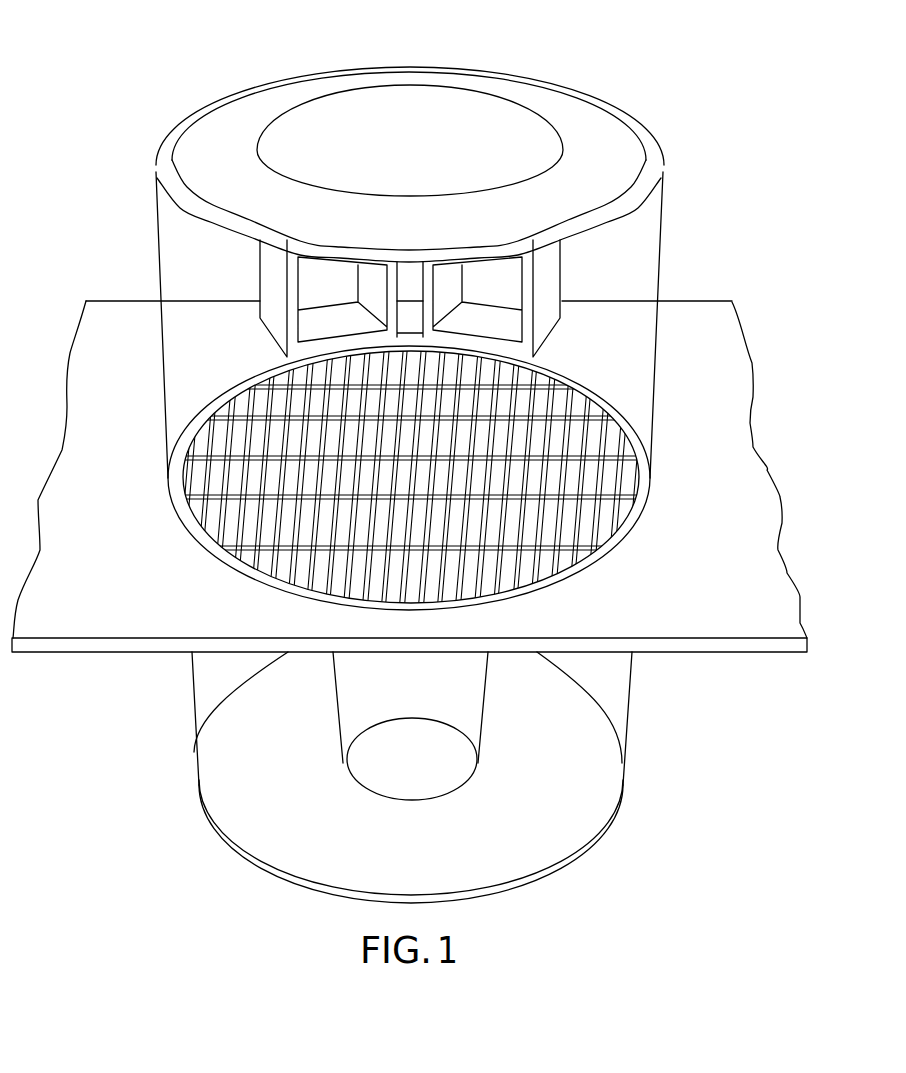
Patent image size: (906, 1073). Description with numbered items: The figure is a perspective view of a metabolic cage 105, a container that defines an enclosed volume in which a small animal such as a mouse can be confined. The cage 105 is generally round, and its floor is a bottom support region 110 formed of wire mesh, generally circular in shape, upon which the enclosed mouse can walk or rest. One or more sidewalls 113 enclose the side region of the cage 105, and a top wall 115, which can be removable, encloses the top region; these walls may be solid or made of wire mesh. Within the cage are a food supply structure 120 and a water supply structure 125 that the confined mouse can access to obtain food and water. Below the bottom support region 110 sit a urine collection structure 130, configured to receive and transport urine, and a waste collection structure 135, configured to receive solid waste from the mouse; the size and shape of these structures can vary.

The cage 105 is at (128, 41).
The bottom support region 110 is at (562, 500).
The sidewalls 113 is at (613, 348).
The top wall 115 is at (550, 110).
The food supply structure 120 is at (503, 283).
The water supply structure 125 is at (313, 283).
The urine collection structure 130 is at (302, 814).
The waste collection structure 135 is at (440, 773).